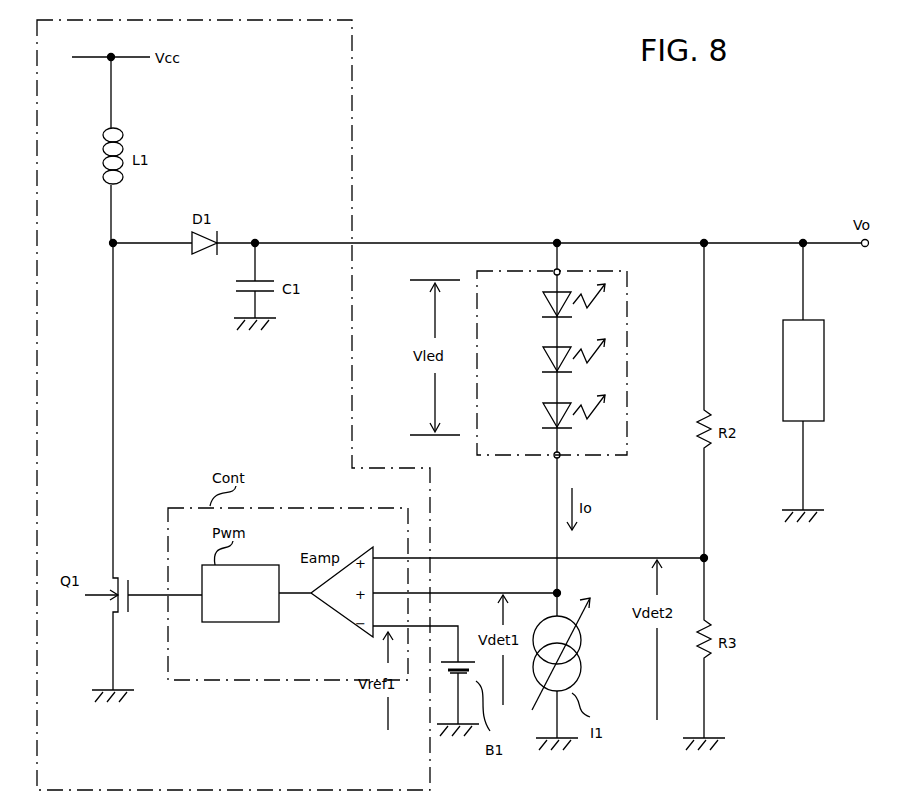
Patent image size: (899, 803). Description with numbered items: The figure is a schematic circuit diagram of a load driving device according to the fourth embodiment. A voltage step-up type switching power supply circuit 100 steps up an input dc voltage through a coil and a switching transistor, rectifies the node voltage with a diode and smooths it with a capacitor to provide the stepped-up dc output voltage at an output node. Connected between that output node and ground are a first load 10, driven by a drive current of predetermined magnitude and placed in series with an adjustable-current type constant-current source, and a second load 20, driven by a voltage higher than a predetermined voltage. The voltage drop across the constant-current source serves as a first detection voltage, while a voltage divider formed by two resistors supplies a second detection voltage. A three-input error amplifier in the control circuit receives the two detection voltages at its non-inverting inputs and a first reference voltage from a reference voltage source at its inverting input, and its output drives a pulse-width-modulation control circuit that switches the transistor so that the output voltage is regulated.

The switching power supply circuit 100 is at (355, 51).
The first load 10 is at (628, 300).
The second load 20 is at (826, 362).